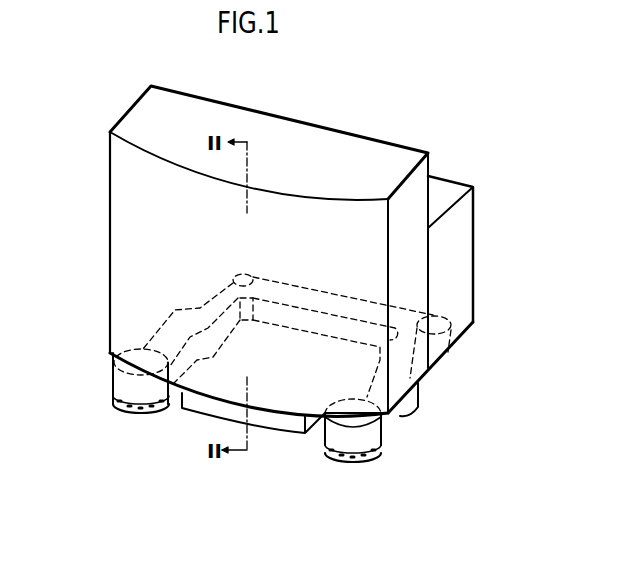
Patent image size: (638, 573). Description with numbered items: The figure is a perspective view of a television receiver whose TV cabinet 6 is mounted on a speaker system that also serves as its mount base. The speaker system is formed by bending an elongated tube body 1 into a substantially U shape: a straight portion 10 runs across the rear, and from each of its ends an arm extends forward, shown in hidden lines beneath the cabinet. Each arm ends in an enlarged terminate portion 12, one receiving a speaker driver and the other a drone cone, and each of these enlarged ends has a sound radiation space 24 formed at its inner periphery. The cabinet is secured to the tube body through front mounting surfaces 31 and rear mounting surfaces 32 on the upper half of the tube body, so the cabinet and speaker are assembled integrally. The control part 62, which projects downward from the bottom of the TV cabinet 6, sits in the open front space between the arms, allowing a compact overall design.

The tube body 1 is at (400, 417).
The TV cabinet 6 is at (142, 225).
The straight portion 10 is at (307, 292).
The terminate portion of the arm 12 is at (122, 387).
The sound radiation space 24 is at (118, 409).
The front mounting surface 31 is at (135, 350).
The rear mounting surface 32 is at (233, 273).
The control part 62 is at (270, 422).